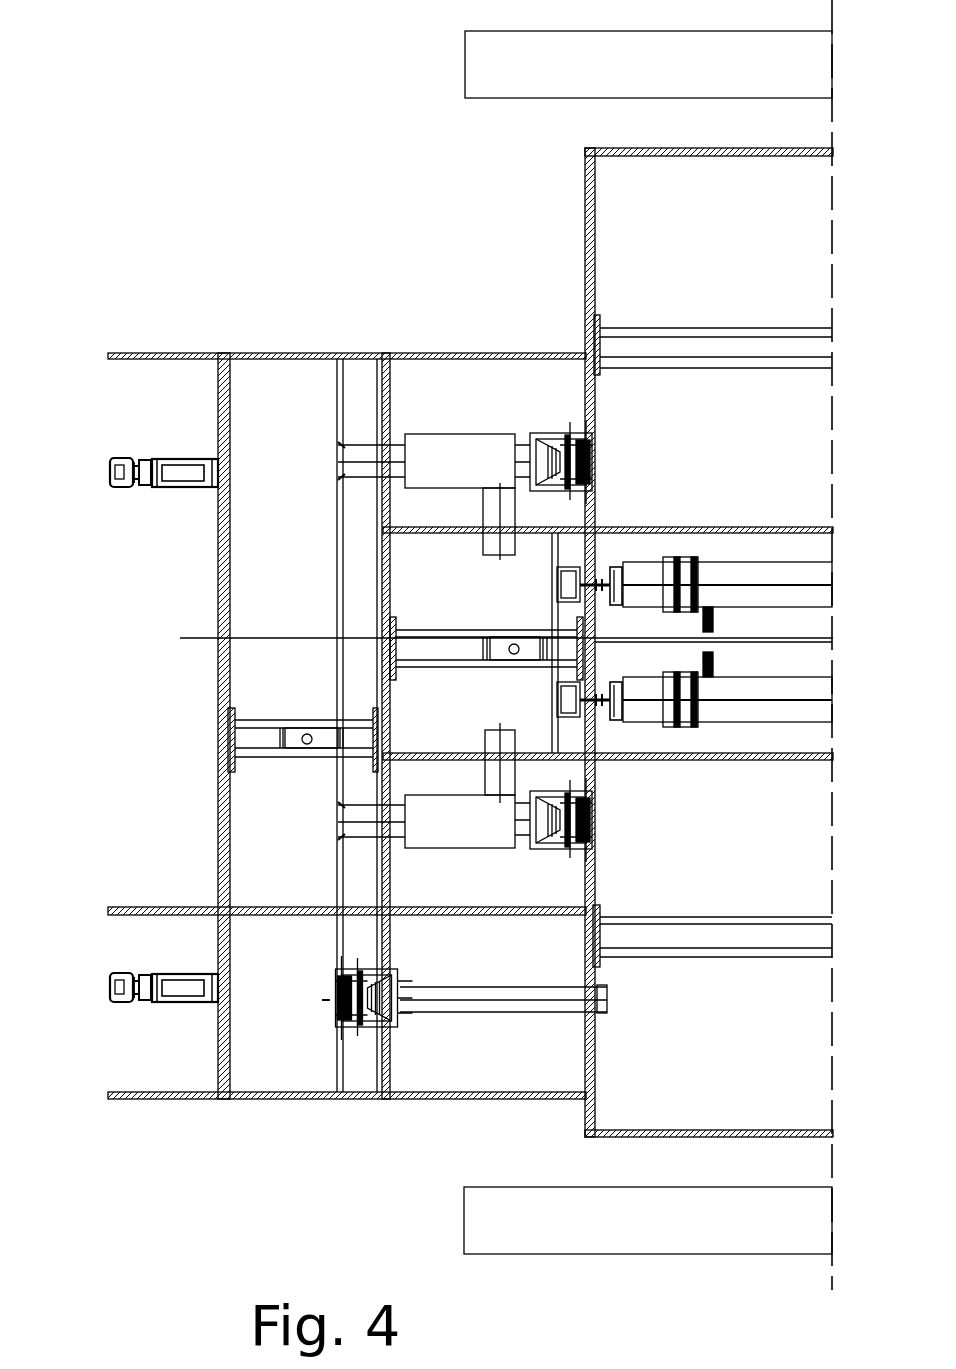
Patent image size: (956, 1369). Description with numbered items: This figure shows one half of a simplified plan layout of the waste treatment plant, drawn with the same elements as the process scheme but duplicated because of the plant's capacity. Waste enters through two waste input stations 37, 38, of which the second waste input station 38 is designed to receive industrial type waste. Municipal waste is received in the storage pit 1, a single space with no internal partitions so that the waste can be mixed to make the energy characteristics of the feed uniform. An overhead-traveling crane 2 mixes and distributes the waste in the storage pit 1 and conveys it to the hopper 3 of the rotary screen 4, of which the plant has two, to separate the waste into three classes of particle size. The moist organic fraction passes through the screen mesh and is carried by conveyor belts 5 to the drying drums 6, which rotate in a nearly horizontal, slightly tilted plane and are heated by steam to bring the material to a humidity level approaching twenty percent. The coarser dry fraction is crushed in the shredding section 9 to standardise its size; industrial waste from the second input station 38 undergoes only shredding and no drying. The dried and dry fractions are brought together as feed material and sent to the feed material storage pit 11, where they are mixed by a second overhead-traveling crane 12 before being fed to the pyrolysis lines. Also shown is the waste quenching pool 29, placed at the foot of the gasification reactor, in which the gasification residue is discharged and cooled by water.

The storage pit 1 is at (292, 440).
The overhead-traveling crane 2 is at (295, 748).
The hopper 3 is at (350, 467).
The rotary screen 4 is at (473, 440).
The conveyor belts 5 is at (495, 516).
The drying drum 6 is at (822, 580).
The shredding section 9 is at (560, 428).
The feed material storage pit 11 is at (717, 305).
The overhead-traveling crane 12 is at (822, 348).
The waste quenching pool 29 is at (565, 93).
The waste input station 37 is at (183, 543).
The waste input station 38 is at (183, 1058).